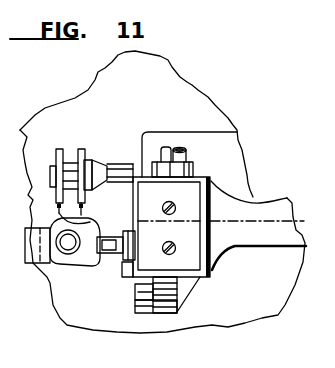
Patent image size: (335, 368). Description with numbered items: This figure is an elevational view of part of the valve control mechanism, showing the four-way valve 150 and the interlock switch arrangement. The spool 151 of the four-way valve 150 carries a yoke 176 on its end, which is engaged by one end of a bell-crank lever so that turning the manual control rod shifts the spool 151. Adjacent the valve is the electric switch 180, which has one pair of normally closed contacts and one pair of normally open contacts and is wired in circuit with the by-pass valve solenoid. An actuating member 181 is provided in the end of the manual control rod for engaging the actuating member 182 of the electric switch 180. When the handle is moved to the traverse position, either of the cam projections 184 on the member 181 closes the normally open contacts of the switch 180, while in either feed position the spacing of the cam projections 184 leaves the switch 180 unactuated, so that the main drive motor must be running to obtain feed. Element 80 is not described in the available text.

The 4-way valve 150 is at (192, 133).
The spool 151 is at (116, 162).
The yoke 176 is at (76, 148).
The electric switch 180 is at (191, 196).
The actuating member 181 is at (85, 207).
The actuating member 182 is at (115, 256).
The cam projections 184 is at (92, 226).
The frame block 80 is at (25, 234).